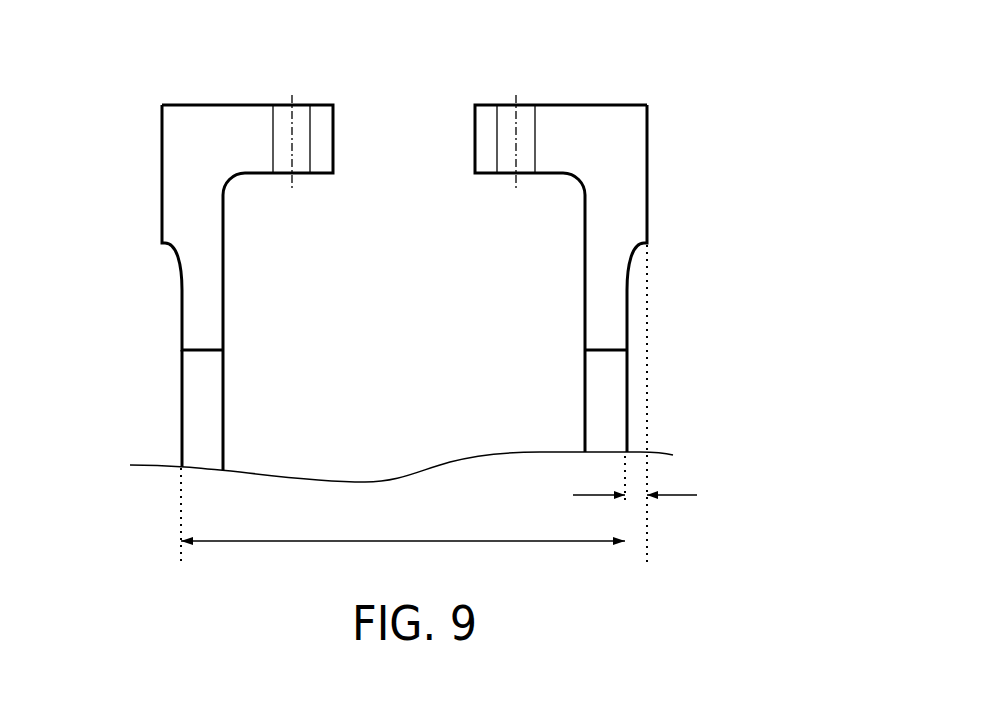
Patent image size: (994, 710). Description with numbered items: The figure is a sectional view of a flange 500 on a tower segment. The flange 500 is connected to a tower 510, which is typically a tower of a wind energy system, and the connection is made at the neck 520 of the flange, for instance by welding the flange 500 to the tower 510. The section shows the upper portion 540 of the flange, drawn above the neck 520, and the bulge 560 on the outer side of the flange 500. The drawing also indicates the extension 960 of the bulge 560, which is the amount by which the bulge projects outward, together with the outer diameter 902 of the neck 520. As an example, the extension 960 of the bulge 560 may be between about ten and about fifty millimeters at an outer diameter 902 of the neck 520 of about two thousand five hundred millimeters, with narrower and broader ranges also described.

The flange 500 is at (158, 74).
The tower 510 is at (197, 417).
The neck 520 is at (197, 322).
The head portion 540 is at (592, 133).
The bulge 560 is at (647, 220).
The outer diameter 902 is at (403, 515).
The extension 960 is at (640, 497).